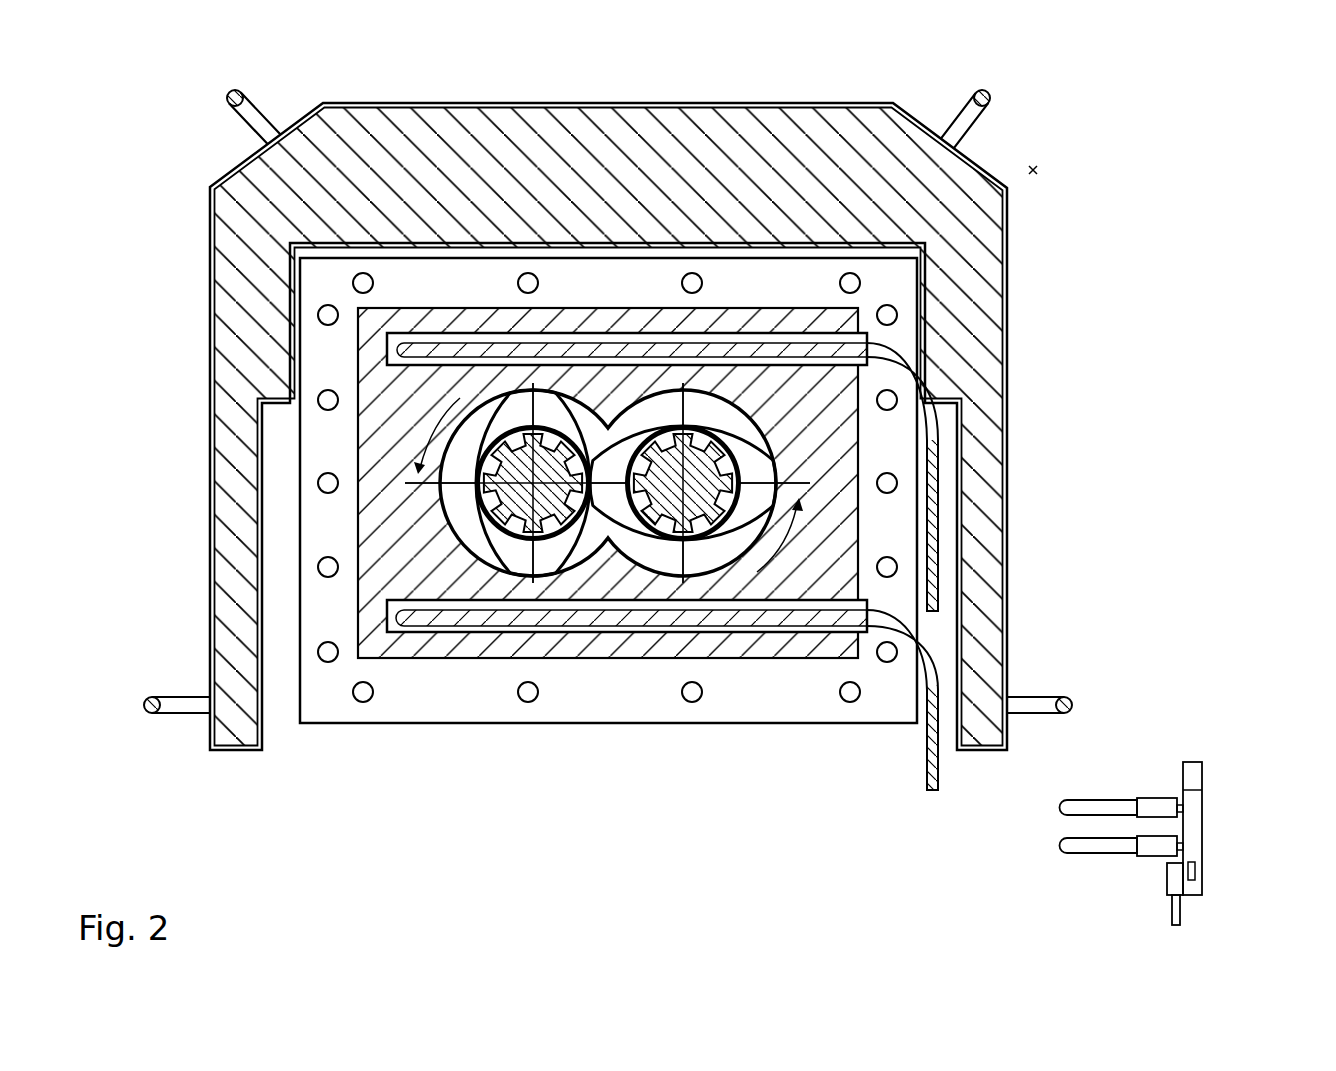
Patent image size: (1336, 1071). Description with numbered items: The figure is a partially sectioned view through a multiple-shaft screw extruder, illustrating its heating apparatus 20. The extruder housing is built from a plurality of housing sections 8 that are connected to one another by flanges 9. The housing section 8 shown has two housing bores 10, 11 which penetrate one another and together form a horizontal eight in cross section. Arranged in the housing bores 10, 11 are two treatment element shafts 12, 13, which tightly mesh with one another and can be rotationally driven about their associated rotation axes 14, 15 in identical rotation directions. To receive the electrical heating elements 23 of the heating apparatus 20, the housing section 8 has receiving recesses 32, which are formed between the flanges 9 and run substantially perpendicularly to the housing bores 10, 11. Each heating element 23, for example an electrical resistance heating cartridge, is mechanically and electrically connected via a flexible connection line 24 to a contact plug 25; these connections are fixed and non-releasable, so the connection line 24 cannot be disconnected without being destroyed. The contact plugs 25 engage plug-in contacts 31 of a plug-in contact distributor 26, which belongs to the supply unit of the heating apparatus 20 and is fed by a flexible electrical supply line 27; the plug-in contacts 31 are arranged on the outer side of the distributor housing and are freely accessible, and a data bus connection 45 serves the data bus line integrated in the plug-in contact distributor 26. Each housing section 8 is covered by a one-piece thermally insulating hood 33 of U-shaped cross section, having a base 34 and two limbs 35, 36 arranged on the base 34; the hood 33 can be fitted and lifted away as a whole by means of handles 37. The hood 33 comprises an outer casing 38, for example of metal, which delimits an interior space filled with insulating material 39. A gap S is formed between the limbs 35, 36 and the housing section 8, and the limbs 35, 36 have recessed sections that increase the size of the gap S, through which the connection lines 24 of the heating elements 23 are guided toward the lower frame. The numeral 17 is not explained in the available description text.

The housing section 8 is at (882, 236).
The flange 9 is at (902, 284).
The housing bore 10 is at (463, 525).
The housing bore 11 is at (740, 432).
The treatment element shaft 12 is at (515, 410).
The treatment element shaft 13 is at (715, 410).
The rotation axis 14 is at (522, 505).
The rotation axis 15 is at (668, 505).
The extruder 17 is at (1040, 169).
The heating apparatus 20 is at (908, 746).
The heating element 23 is at (707, 347).
The connection line 24 is at (933, 516).
The contact plug 25 is at (1152, 806).
The plug-in contact distributor 26 is at (1211, 800).
The supply line 27 is at (1178, 912).
The plug-in contact 31 is at (1181, 846).
The receiving recess 32 is at (497, 335).
The thermally insulating hood 33 is at (628, 98).
The base 34 is at (550, 103).
The limb 35 is at (220, 601).
The limb 36 is at (991, 573).
The handle 37 is at (238, 90).
The outer casing 38 is at (1004, 458).
The insulating material 39 is at (989, 342).
The data bus connection 45 is at (1192, 870).
The gap S is at (938, 631).